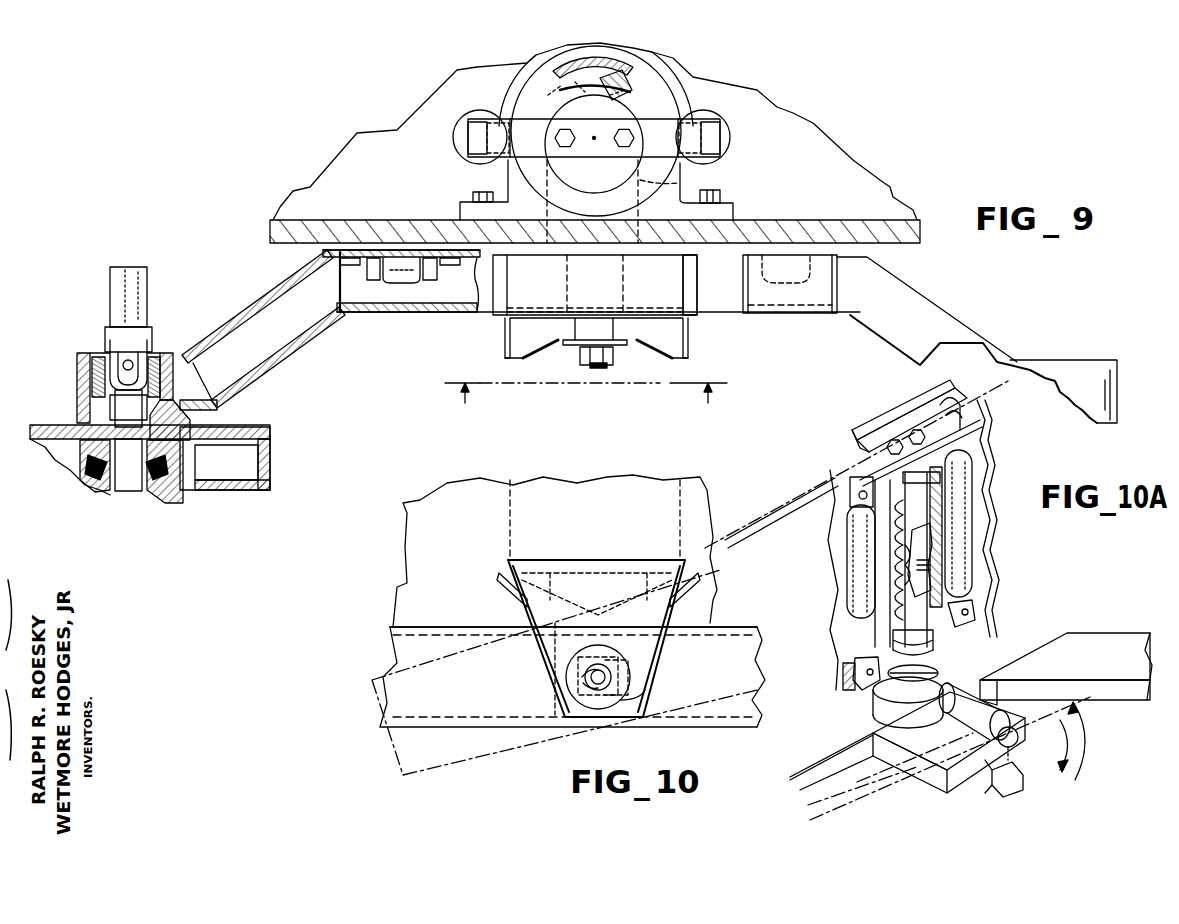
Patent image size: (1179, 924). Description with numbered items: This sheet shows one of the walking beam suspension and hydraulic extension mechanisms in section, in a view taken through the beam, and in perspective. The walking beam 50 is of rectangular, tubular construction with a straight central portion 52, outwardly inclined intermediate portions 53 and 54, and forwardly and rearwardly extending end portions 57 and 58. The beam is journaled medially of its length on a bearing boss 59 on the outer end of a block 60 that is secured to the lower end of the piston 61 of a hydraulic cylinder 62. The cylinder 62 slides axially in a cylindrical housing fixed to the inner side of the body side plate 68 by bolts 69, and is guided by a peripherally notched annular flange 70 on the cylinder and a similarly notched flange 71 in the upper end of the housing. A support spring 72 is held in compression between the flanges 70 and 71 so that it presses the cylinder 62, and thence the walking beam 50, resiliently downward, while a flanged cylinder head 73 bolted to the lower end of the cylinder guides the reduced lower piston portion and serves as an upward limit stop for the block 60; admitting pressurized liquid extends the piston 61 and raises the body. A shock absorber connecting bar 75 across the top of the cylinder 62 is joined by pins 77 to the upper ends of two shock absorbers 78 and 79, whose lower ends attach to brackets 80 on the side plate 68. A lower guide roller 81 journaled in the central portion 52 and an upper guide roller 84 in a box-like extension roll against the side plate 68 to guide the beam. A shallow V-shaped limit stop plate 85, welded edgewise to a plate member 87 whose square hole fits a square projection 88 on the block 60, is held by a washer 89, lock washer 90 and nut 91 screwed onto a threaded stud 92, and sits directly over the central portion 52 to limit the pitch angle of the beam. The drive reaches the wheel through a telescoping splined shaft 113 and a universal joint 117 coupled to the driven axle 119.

In FIG. 9, the walking beam 50 is at (732, 320).
In FIG. 10, the walking beam 50 is at (447, 624).
In FIG. 10A, the walking beam 50 is at (1040, 638).
In FIG. 9, the straight central portion 52 is at (455, 312).
In FIG. 10, the straight central portion 52 is at (452, 728).
In FIG. 10A, the straight central portion 52 is at (1023, 660).
In FIG. 9, the outwardly inclined intermediate portion 53 is at (862, 348).
In FIG. 10A, the outwardly inclined intermediate portion 53 is at (1100, 628).
In FIG. 9, the outwardly inclined intermediate portion 54 is at (293, 352).
In FIG. 9, the end portion 57 is at (1075, 355).
In FIG. 9, the end portion 58 is at (213, 410).
In FIG. 9, the bearing boss 59 is at (623, 298).
In FIG. 10A, the bearing boss 59 is at (978, 712).
In FIG. 9, the block 60 is at (681, 200).
In FIG. 10, the block 60 is at (632, 730).
In FIG. 10A, the block 60 is at (948, 695).
In FIG. 10A, the piston 61 is at (965, 550).
In FIG. 9, the hydraulic cylinder 62 is at (573, 173).
In FIG. 10A, the hydraulic cylinder 62 is at (935, 512).
In FIG. 9, the body side plate 68 is at (812, 222).
In FIG. 10, the body side plate 68 is at (410, 512).
In FIG. 10A, the body side plate 68 is at (990, 465).
In FIG. 9, the bolts 69 is at (723, 195).
In FIG. 10A, the annular flange 70 is at (932, 662).
In FIG. 9, the notched flange 71 is at (647, 100).
In FIG. 10A, the notched flange 71 is at (885, 543).
In FIG. 9, the support spring 72 is at (567, 83).
In FIG. 10A, the support spring 72 is at (950, 538).
In FIG. 10A, the flanged cylinder head 73 is at (882, 690).
In FIG. 9, the shock absorber connecting bar 75 is at (478, 148).
In FIG. 10A, the shock absorber connecting bar 75 is at (968, 430).
In FIG. 10A, the pins 77 is at (850, 507).
In FIG. 9, the shock absorber 78 is at (499, 103).
In FIG. 10A, the shock absorber 78 is at (850, 577).
In FIG. 9, the shock absorber 79 is at (707, 107).
In FIG. 10A, the shock absorber 79 is at (962, 508).
In FIG. 10A, the brackets 80 is at (965, 612).
In FIG. 9, the guide roller 81 is at (402, 283).
In FIG. 9, the guide roller 84 is at (812, 262).
In FIG. 9, the V-shaped limit stop plate 85 is at (698, 288).
In FIG. 10, the V-shaped limit stop plate 85 is at (695, 580).
In FIG. 9, the plate member 87 is at (670, 325).
In FIG. 10, the plate member 87 is at (585, 568).
In FIG. 9, the square projection 88 is at (560, 343).
In FIG. 10, the square projection 88 is at (650, 662).
In FIG. 10A, the square projection 88 is at (1012, 737).
In FIG. 9, the washer 89 is at (655, 350).
In FIG. 10, the washer 89 is at (640, 685).
In FIG. 9, the lock washer 90 is at (626, 345).
In FIG. 9, the nut 91 is at (605, 366).
In FIG. 10, the nut 91 is at (583, 683).
In FIG. 9, the threaded stud 92 is at (590, 366).
In FIG. 10, the threaded stud 92 is at (582, 677).
In FIG. 10A, the threaded stud 92 is at (1018, 790).
In FIG. 9, the telescoping splined shaft 113 is at (112, 288).
In FIG. 9, the universal joint 117 is at (120, 360).
In FIG. 9, the driven axle 119 is at (128, 462).